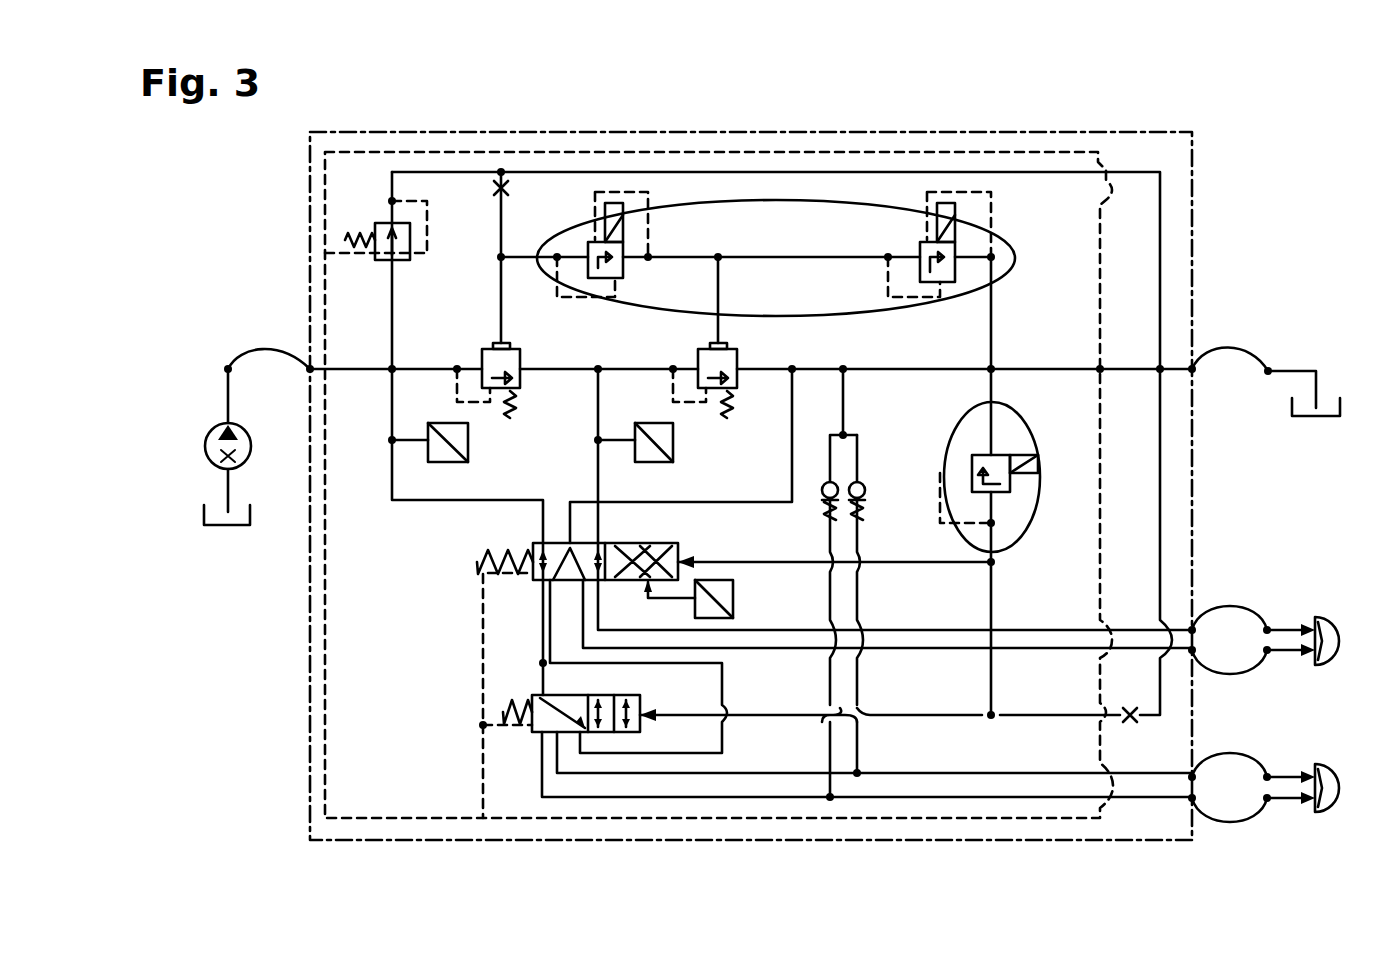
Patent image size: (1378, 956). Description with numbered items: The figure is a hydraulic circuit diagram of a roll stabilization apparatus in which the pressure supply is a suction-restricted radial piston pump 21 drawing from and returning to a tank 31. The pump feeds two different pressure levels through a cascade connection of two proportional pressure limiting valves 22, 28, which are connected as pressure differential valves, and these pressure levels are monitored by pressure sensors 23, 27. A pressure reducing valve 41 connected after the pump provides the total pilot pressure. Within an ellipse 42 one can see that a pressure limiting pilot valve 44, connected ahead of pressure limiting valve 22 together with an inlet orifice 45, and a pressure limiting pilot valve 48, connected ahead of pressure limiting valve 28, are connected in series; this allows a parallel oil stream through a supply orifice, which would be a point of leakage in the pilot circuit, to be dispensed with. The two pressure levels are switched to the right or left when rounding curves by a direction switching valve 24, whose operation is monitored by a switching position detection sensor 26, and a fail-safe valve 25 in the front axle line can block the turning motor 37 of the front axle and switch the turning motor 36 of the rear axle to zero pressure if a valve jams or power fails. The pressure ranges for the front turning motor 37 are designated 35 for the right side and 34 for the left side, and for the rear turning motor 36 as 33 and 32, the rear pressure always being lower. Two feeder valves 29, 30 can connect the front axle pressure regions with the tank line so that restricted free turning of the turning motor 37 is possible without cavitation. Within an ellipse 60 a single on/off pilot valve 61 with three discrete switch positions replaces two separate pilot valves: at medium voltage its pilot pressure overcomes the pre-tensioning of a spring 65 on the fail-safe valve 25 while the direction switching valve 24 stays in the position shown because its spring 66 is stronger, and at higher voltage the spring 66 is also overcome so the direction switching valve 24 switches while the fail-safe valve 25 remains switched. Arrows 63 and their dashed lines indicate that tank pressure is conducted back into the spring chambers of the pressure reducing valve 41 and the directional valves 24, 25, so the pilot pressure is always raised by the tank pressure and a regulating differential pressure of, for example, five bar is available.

The radial piston pump 21 is at (205, 447).
The proportional pressure limiting valve 22 is at (482, 360).
The pressure sensor 23 is at (468, 452).
The direction switching valve 24 is at (678, 550).
The fail-safe valve 25 is at (640, 700).
The switching position detection sensor 26 is at (733, 600).
The pressure sensor 27 is at (673, 452).
The proportional pressure limiting valve 28 is at (700, 360).
The feeder valve 29 is at (822, 492).
The feeder valve 30 is at (865, 492).
The tank 31 is at (1325, 416).
The pressure range 32 is at (1194, 628).
The pressure range 33 is at (1194, 652).
The pressure range 34 is at (1190, 775).
The pressure range 35 is at (1194, 800).
The turning motor 36 is at (1322, 668).
The turning motor 37 is at (1322, 815).
The pressure reducing valve 41 is at (410, 243).
The ellipse 42 is at (797, 190).
The pressure limiting pilot valve 44 is at (601, 203).
The inlet orifice 45 is at (492, 183).
The pressure limiting pilot valve 48 is at (935, 203).
The ellipse 60 is at (960, 415).
The on/off pilot valve 61 is at (998, 455).
The arrows 63 is at (322, 243).
The spring 65 is at (503, 712).
The spring 66 is at (477, 562).